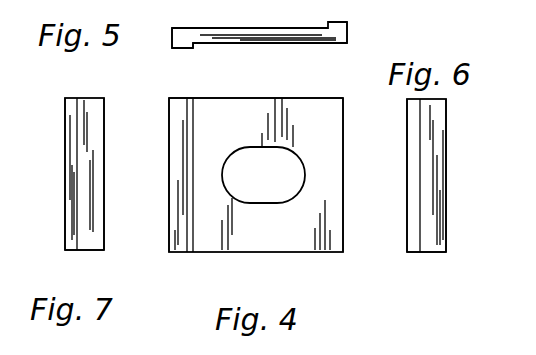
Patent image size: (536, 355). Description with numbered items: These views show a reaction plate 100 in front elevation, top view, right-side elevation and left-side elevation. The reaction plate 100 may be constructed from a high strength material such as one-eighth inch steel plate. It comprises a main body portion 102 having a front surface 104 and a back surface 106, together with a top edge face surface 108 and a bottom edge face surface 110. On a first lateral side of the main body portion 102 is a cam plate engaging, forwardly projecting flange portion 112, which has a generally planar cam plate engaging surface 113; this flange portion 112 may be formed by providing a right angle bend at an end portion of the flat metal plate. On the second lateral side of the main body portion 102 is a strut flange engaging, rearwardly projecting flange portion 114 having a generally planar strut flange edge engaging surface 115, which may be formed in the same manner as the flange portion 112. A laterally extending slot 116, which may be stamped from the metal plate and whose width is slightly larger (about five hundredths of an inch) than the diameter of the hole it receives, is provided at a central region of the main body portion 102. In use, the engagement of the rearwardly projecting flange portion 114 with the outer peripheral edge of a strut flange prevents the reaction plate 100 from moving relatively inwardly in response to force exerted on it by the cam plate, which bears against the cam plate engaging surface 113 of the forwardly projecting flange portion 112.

In FIG. 5, the reaction plate 100 is at (196, 27).
In FIG. 4, the reaction plate 100 is at (214, 95).
In FIG. 7, the reaction plate 100 is at (56, 150).
In FIG. 6, the reaction plate 100 is at (452, 179).
In FIG. 5, the main body portion 102 is at (305, 41).
In FIG. 5, the front surface 104 is at (268, 43).
In FIG. 5, the back surface 106 is at (254, 21).
In FIG. 5, the top edge face surface 108 is at (314, 44).
In FIG. 4, the top edge face surface 108 is at (232, 98).
In FIG. 4, the bottom edge face surface 110 is at (305, 256).
In FIG. 5, the cam plate engaging, forwardly projecting flange portion 112 is at (171, 45).
In FIG. 4, the cam plate engaging, forwardly projecting flange portion 112 is at (186, 238).
In FIG. 7, the cam plate engaging, forwardly projecting flange portion 112 is at (95, 241).
In FIG. 6, the cam plate engaging, forwardly projecting flange portion 112 is at (411, 246).
In FIG. 5, the cam plate engaging surface 113 is at (207, 45).
In FIG. 6, the cam plate engaging surface 113 is at (416, 150).
In FIG. 5, the strut flange engaging, rearwardly projecting flange portion 114 is at (345, 27).
In FIG. 7, the strut flange engaging, rearwardly projecting flange portion 114 is at (70, 238).
In FIG. 6, the strut flange engaging, rearwardly projecting flange portion 114 is at (437, 146).
In FIG. 5, the strut flange edge engaging surface 115 is at (330, 28).
In FIG. 7, the strut flange edge engaging surface 115 is at (70, 204).
In FIG. 4, the laterally extending slot 116 is at (250, 187).